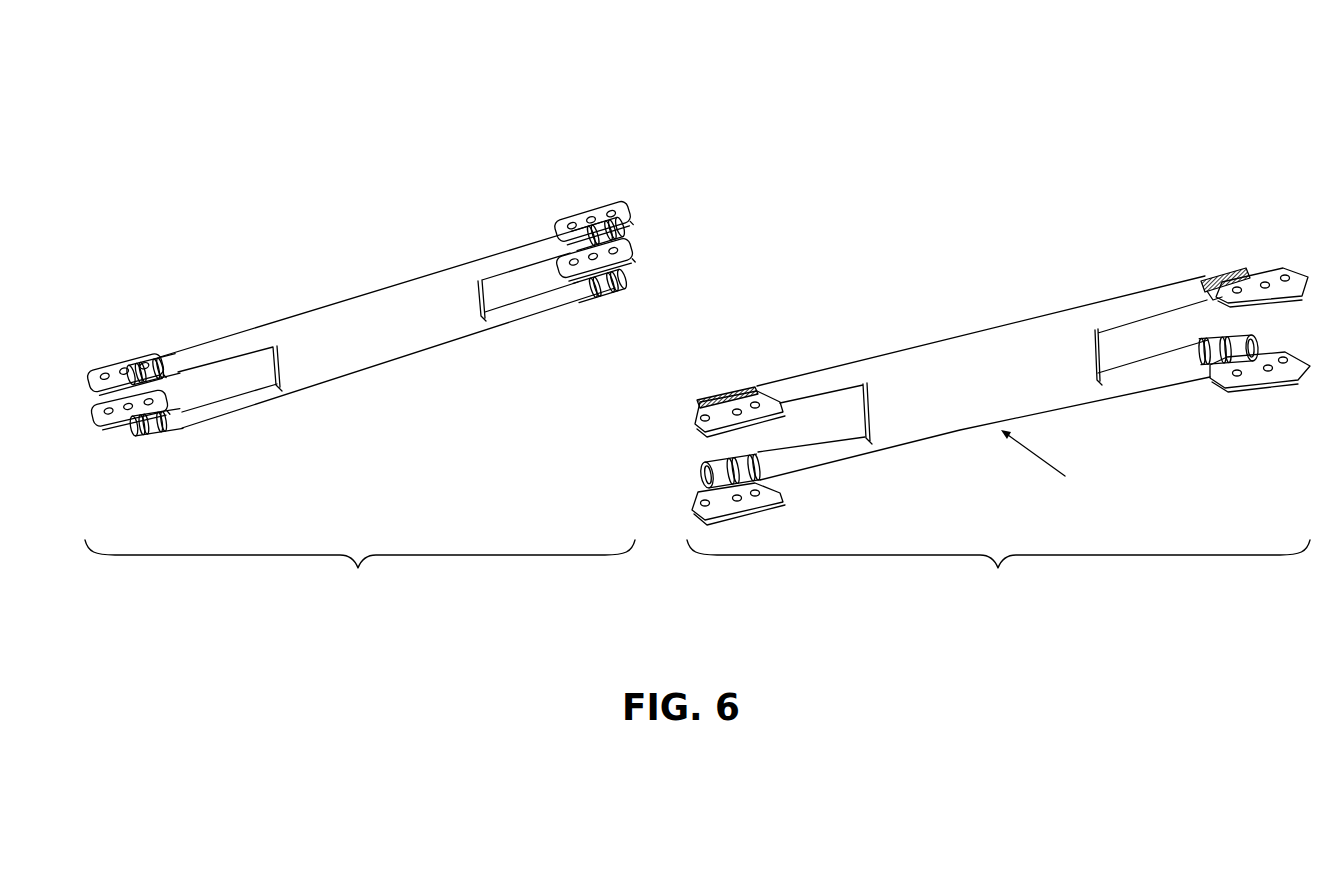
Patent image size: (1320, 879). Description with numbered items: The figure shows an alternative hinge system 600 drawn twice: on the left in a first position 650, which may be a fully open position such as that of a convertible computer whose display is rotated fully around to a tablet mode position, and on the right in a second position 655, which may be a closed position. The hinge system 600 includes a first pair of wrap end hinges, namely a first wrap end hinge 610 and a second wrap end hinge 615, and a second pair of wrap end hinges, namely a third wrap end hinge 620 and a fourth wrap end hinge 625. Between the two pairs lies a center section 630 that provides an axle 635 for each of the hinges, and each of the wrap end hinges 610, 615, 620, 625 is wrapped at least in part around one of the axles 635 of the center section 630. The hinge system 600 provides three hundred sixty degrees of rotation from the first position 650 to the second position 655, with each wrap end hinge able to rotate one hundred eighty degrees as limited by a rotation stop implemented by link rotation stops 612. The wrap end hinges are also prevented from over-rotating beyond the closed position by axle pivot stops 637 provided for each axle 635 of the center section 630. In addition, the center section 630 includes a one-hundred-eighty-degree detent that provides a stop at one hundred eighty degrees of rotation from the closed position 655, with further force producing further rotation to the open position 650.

The hinge system 600 is at (277, 133).
The first wrap end hinge 610 is at (733, 393).
The link rotation stops 612 is at (782, 480).
The second wrap end hinge 615 is at (168, 433).
The third wrap end hinge 620 is at (128, 352).
The fourth wrap end hinge 625 is at (590, 301).
The center section 630 is at (304, 313).
The axle 635 is at (237, 413).
The axle pivot stops 637 is at (765, 370).
The first position 650 is at (360, 591).
The second position 655 is at (998, 591).